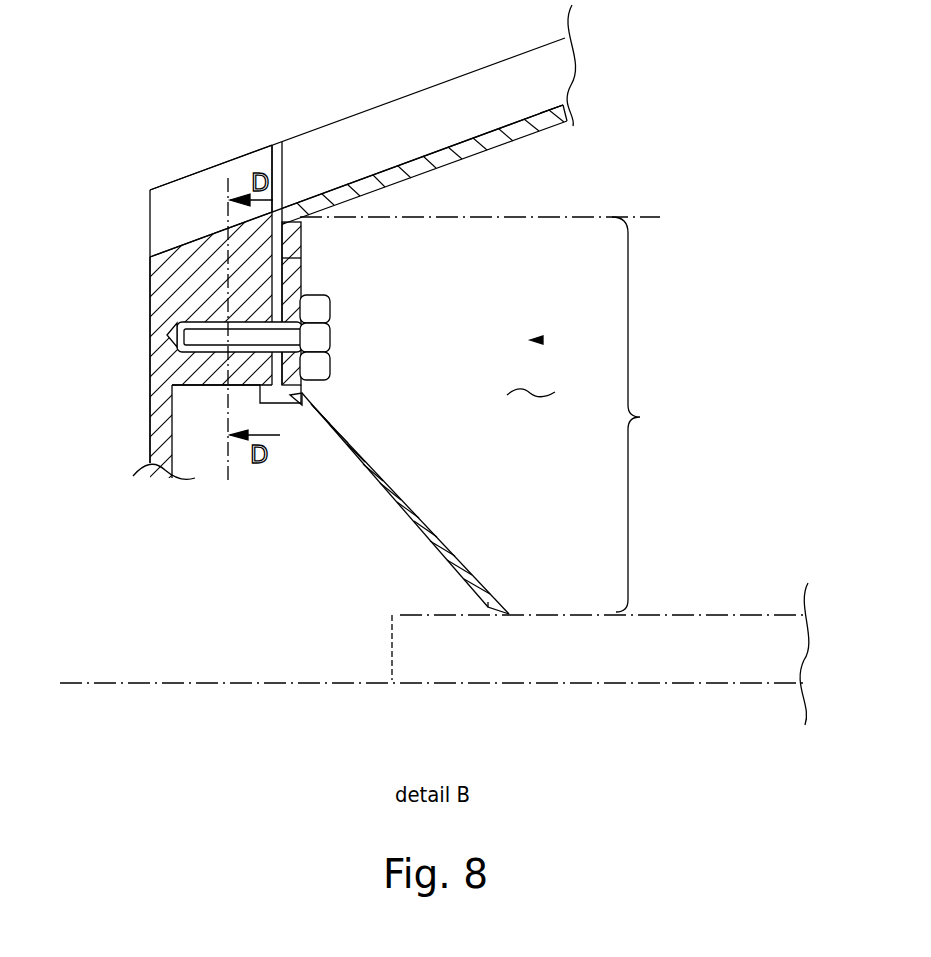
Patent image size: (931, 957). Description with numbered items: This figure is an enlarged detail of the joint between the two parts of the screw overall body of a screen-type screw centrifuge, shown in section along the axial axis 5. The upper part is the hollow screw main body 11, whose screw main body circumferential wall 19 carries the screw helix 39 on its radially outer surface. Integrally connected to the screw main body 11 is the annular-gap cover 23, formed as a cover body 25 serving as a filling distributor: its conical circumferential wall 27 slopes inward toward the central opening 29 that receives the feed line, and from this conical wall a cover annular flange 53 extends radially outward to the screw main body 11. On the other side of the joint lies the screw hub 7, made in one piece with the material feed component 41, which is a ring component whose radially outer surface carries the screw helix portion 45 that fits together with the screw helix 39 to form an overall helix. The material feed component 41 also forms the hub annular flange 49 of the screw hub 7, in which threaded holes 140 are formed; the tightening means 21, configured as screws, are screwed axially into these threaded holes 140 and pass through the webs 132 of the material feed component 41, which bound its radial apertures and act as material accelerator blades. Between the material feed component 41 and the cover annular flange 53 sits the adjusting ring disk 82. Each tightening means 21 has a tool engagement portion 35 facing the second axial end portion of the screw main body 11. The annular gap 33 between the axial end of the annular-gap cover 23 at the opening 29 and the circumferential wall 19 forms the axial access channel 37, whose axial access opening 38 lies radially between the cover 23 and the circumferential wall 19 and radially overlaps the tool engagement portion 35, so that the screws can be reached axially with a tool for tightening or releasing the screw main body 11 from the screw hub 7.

The axial axis 5 is at (745, 683).
The screw hub 7 is at (163, 428).
The hollow screw main body 11 is at (512, 130).
The screw main body circumferential wall 19 is at (540, 127).
The tightening means 21 is at (189, 297).
The annular-gap cover 23 is at (364, 460).
The cover body 25 is at (399, 503).
The conical circumferential wall 27 is at (458, 567).
The central opening 29 is at (489, 616).
The annular gap 33 is at (486, 414).
The tool engagement portion 35 is at (331, 342).
The axial access channel 37 is at (543, 340).
The axial access opening 38 is at (552, 392).
The screw helix 39 is at (437, 107).
The material feed component 41 is at (160, 400).
The screw helix portion 45 is at (172, 222).
The hub annular flange 49 is at (150, 338).
The cover annular flange 53 is at (296, 283).
The adjusting ring disk 82 is at (303, 216).
The webs 132 is at (247, 235).
The threaded holes 140 is at (160, 373).